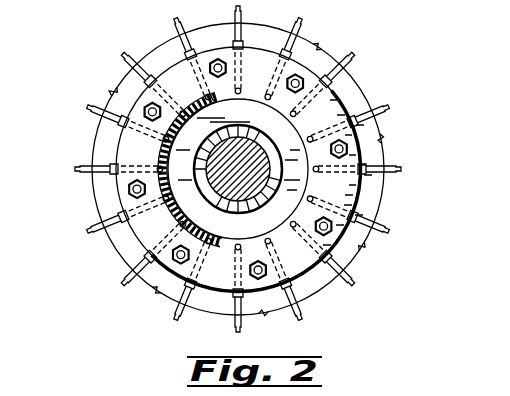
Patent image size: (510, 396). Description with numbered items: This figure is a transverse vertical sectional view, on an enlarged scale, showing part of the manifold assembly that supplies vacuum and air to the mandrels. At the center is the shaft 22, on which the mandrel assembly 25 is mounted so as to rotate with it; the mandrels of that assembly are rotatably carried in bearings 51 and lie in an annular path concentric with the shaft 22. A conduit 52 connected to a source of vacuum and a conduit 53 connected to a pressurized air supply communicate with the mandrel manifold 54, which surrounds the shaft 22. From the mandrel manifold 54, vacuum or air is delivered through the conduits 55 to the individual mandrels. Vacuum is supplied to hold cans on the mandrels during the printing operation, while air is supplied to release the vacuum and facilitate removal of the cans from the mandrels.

The shaft 22 is at (229, 192).
The mandrel assembly 25 is at (366, 87).
The bearings 51 is at (311, 298).
The conduit 52 is at (190, 159).
The conduit 53 is at (254, 296).
The mandrel manifold 54 is at (371, 100).
The conduits 55 is at (302, 19).